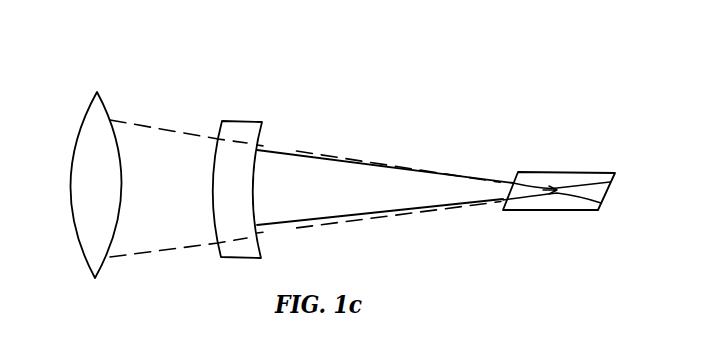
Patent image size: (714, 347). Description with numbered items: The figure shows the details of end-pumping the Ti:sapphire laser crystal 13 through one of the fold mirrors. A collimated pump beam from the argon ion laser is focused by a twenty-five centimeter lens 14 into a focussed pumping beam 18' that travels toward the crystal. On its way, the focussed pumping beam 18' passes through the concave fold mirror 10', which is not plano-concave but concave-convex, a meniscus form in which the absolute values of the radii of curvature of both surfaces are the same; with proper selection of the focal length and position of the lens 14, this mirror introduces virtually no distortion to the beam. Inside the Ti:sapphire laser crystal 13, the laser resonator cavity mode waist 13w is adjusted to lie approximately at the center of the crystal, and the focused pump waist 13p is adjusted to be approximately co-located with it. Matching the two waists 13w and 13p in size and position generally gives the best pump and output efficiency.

The lens 14 is at (77, 140).
The focussed pumping beam 18' is at (310, 153).
The concave fold mirror 10' is at (243, 156).
The Ti:sapphire laser crystal 13 is at (552, 171).
The laser resonator cavity mode waist 13w is at (562, 212).
The focused pump waist 13p is at (563, 215).